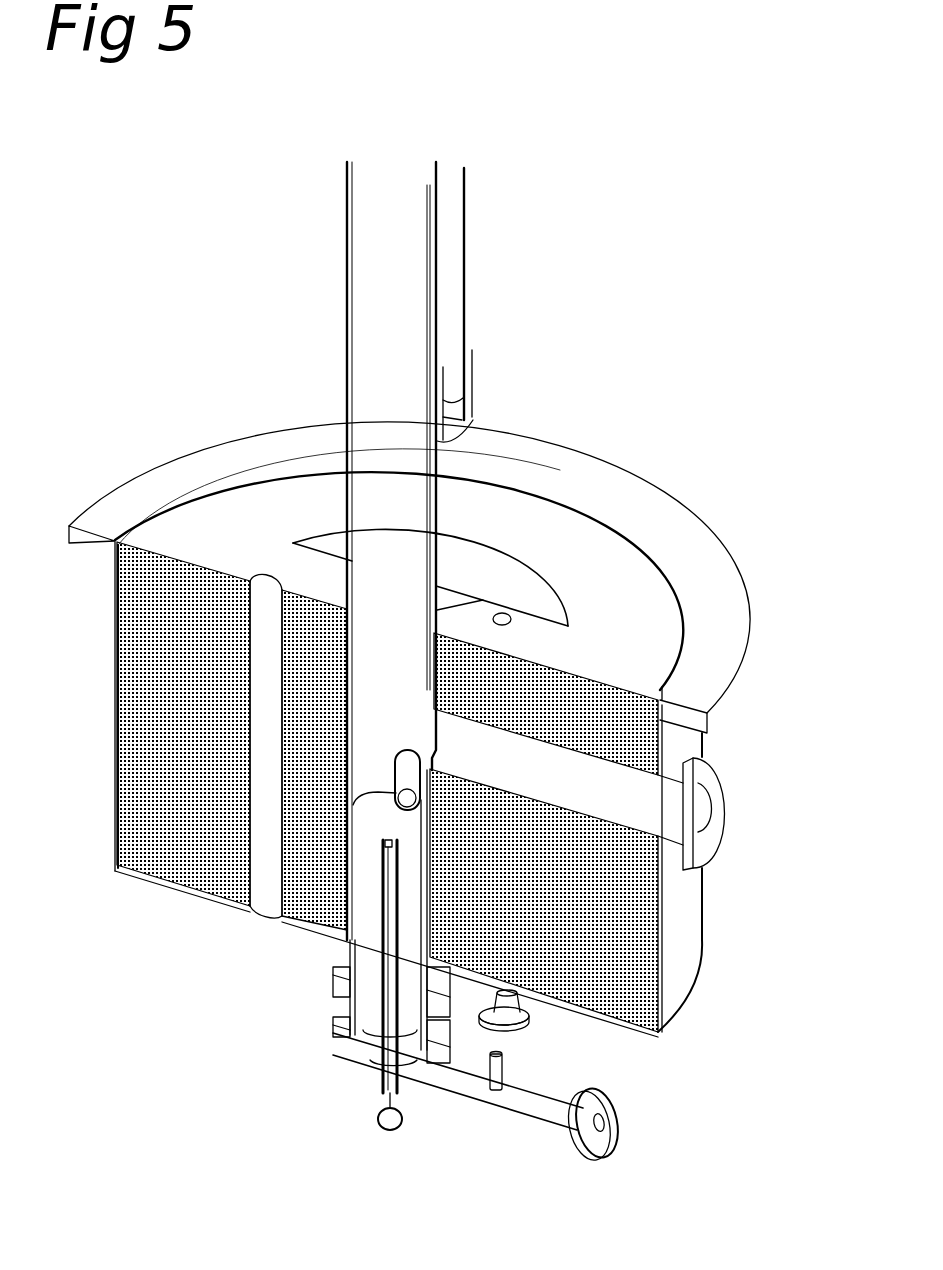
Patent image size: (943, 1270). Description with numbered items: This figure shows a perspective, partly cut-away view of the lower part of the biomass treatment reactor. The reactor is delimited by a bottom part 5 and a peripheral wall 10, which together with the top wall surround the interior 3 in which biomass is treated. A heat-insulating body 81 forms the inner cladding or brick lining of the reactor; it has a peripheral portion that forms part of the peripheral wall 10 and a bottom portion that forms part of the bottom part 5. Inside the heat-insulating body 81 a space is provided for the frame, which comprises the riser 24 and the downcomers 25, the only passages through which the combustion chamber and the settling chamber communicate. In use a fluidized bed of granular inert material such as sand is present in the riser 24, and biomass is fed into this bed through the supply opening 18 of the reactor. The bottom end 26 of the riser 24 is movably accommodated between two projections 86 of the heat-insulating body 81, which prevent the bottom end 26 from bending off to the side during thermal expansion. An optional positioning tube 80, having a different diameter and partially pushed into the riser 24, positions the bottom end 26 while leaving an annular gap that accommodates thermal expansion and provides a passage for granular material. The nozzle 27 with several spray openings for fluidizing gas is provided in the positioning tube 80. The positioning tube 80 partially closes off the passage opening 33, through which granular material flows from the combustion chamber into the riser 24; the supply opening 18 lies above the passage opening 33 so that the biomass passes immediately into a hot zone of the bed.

The interior 3 is at (517, 560).
The bottom part 5 is at (590, 1010).
The peripheral wall 10 is at (117, 745).
The supply opening 18 is at (630, 802).
The riser 24 is at (378, 267).
The downcomer 25 is at (448, 288).
The bottom end 26 is at (365, 722).
The nozzle 27 is at (387, 1048).
The passage opening 33 is at (408, 772).
The positioning tube 80 is at (370, 990).
The heat-insulating body 81 is at (160, 533).
The projections 86 is at (312, 580).